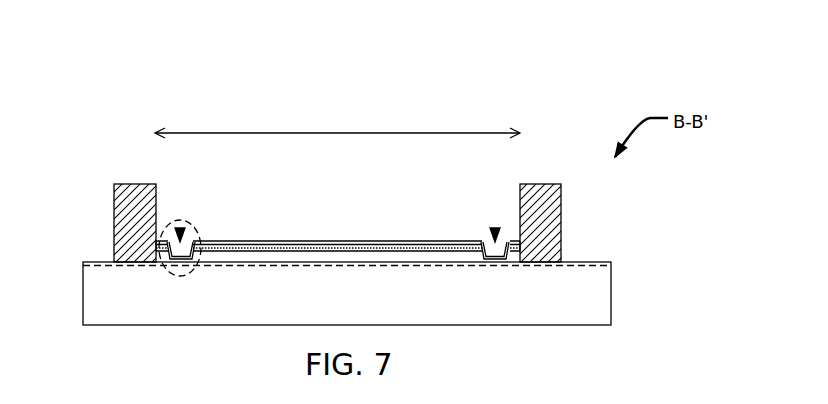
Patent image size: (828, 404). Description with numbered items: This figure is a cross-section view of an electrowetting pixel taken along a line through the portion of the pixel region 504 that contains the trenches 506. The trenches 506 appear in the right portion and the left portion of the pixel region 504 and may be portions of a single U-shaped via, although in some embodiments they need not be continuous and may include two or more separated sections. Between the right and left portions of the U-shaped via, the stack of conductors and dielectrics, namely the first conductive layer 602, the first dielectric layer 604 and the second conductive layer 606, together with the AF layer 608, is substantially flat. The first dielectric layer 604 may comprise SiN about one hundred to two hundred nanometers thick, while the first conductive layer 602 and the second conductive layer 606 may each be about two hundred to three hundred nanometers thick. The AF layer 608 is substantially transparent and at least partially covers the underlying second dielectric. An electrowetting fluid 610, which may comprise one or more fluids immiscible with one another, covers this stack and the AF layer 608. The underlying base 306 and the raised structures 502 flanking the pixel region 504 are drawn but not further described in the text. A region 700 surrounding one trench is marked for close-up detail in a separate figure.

The substrate 306 is at (263, 306).
The first structure (hatched block) 502 is at (114, 236).
The pixel region 504 is at (337, 124).
The trenches 506 is at (180, 228).
The first conductive layer 602 is at (355, 266).
The first dielectric layer 604 is at (303, 242).
The second conductive layer 606 is at (463, 242).
The AF layer 608 is at (355, 242).
The electrowetting fluid 610 is at (338, 205).
The region 700 is at (185, 221).